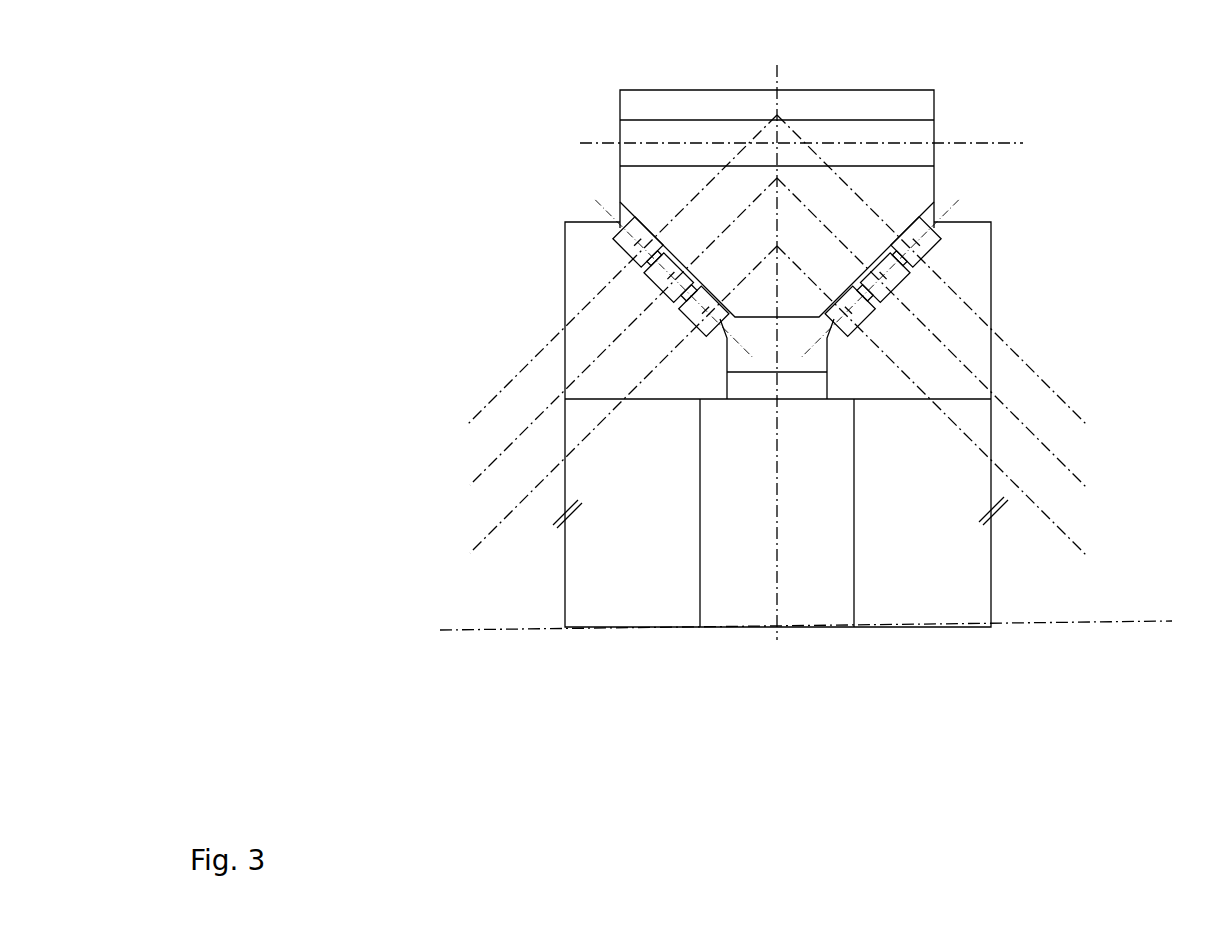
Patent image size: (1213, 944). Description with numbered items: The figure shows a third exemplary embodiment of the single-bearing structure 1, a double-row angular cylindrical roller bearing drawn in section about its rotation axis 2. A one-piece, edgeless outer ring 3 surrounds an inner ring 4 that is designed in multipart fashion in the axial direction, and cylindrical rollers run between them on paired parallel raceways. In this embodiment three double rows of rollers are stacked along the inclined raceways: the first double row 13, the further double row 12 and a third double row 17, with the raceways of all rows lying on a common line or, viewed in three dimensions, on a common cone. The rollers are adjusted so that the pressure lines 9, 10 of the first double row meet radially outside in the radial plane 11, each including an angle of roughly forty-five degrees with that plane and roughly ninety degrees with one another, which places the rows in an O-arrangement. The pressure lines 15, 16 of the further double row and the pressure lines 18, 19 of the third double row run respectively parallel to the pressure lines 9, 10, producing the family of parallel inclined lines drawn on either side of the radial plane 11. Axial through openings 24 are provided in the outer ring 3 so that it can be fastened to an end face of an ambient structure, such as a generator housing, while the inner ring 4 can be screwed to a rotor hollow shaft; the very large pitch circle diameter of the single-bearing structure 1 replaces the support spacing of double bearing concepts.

The single-bearing structure 1 is at (1018, 87).
The rotation axis 2 is at (1127, 620).
The outer ring 3 is at (892, 105).
The inner ring 4 is at (968, 323).
The pressure line 9 is at (623, 399).
The pressure line 10 is at (932, 401).
The radial plane 11 is at (779, 78).
The further double row 12 is at (498, 276).
The first double row 13 is at (498, 318).
The pressure line 15 is at (623, 331).
The pressure line 16 is at (931, 332).
The third double row 17 is at (498, 236).
The pressure line 18 is at (622, 270).
The pressure line 19 is at (932, 270).
The through openings 24 is at (628, 135).